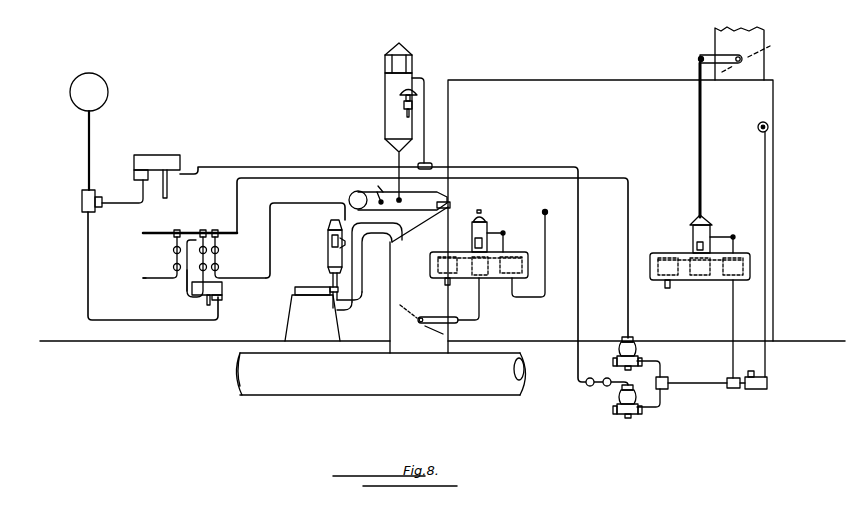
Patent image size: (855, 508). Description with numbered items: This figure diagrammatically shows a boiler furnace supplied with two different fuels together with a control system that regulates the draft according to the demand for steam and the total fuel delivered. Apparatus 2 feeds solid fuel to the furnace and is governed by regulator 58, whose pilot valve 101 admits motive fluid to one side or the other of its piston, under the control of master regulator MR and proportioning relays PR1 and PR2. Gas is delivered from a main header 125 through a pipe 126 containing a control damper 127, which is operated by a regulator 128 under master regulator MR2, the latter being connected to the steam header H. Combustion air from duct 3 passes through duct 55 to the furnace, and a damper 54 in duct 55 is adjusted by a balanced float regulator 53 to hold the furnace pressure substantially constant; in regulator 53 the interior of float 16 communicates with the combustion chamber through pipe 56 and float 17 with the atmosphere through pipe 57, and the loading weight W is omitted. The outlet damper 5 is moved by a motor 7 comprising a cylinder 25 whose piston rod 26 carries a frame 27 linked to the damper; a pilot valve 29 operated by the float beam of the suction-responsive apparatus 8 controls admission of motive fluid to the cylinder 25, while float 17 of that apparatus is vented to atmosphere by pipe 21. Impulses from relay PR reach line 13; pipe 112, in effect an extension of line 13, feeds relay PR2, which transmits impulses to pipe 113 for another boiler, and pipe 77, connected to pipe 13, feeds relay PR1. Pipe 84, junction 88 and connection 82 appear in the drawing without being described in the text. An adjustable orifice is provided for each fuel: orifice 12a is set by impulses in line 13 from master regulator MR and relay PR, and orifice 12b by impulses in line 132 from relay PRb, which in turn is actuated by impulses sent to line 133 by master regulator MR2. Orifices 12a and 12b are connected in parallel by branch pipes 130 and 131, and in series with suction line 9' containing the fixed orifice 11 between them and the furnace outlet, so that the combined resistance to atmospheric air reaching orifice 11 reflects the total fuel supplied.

The steam header H is at (70, 90).
The master regulator MR2 is at (142, 169).
The line 133 is at (297, 167).
The pipe 13 is at (244, 180).
The regulator 128 is at (372, 100).
The pilot valve 101 is at (405, 112).
The control damper 127 is at (384, 190).
The main header 125 is at (349, 194).
The pipe 126 is at (450, 206).
The balanced float regulator 53 is at (516, 226).
The pipe 56 is at (546, 247).
The inverted float 17 is at (430, 266).
The inverted float 16 is at (743, 292).
The pipe 57 is at (449, 285).
The regulator 58 is at (322, 247).
The pipe 84 is at (271, 257).
The pipe junction 88 is at (237, 234).
The proportioning relay PR is at (203, 230).
The proportioning relay PR2 is at (171, 259).
The proportioning relay PR1 is at (223, 257).
The pipe line 112 is at (156, 233).
The pipe line 113 is at (147, 281).
The pipe 77 is at (183, 290).
The pipe 82 is at (203, 310).
The master regulator MR is at (258, 298).
The fuel supplying apparatus 2 is at (318, 326).
The conduit 55 is at (391, 293).
The damper 54 is at (395, 322).
The air duct 3 is at (409, 383).
The outlet damper 5 is at (757, 51).
The suction line 9' is at (742, 267).
The piston rod 26 is at (693, 224).
The frame 27 is at (712, 221).
The motor 7 is at (727, 230).
The loading weight W is at (668, 258).
The pilot valve 29 is at (694, 248).
The cylinder 25 is at (722, 244).
The pipe 21 is at (666, 288).
The suction responsive apparatus 8 is at (705, 290).
The adjustable orifice 12a is at (611, 359).
The line 132 is at (614, 378).
The proportioning relay PRb is at (602, 393).
The adjustable orifice 12b is at (612, 419).
The branch pipe 130 is at (661, 361).
The branch pipe 131 is at (661, 406).
The fixed orifice 11 is at (755, 390).